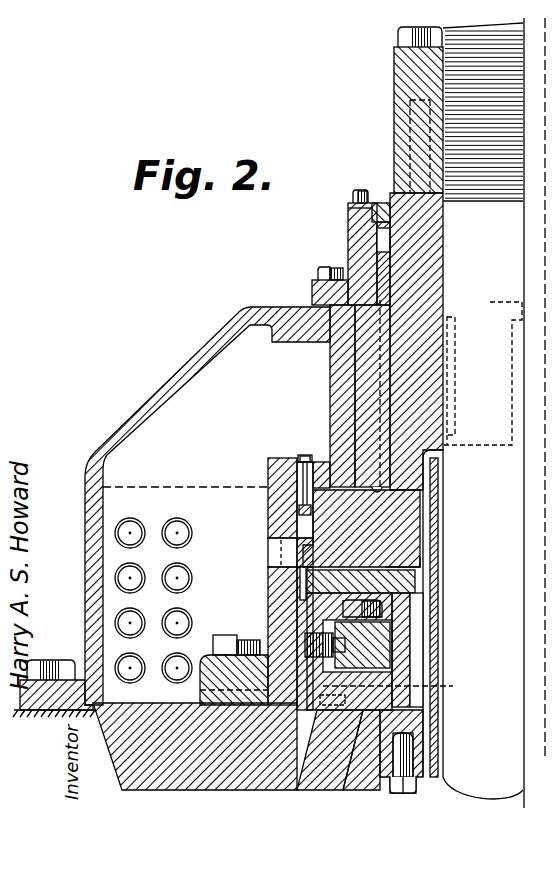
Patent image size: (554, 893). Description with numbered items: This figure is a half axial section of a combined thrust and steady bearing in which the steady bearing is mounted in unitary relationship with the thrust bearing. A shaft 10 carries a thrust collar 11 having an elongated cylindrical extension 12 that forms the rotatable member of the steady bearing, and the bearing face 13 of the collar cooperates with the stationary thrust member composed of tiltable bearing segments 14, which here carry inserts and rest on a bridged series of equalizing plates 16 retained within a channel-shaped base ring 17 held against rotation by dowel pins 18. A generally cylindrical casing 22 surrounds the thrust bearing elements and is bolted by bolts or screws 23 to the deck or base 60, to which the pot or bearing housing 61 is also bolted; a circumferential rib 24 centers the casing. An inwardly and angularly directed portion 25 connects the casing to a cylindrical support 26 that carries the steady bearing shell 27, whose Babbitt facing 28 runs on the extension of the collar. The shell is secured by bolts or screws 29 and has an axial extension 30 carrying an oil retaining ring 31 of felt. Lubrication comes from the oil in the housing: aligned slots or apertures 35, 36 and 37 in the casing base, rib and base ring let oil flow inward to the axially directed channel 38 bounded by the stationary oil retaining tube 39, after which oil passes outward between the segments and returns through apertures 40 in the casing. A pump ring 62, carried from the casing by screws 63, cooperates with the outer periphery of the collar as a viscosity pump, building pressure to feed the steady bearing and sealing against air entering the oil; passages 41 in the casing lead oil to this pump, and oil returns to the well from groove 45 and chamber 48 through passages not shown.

The shaft 10 is at (494, 413).
The thrust collar 11 is at (400, 523).
The cylindrical extension 12 is at (425, 280).
The bearing face 13 is at (390, 565).
The bearing segments 14 is at (415, 581).
The equalizing plates 16 is at (375, 645).
The channel-shaped base ring 17 is at (400, 675).
The dowel pins 18 is at (402, 686).
The casing 22 is at (268, 483).
The bolts or screws 23 is at (226, 636).
The circumferential rib 24 is at (306, 785).
The inwardly directed portion 25 is at (320, 476).
The cylindrical support 26 is at (343, 387).
The steady bearing shell 27 is at (367, 361).
The Babbitt facing 28 is at (387, 318).
The bolts or screws 29 is at (318, 265).
The axial extension 30 is at (360, 242).
The oil retaining ring 31 is at (388, 202).
The slots or apertures in casing base 35 is at (200, 690).
The slots or apertures in circumferential rib 36 is at (266, 712).
The slots or apertures in base ring 37 is at (354, 785).
The axially directed channel 38 is at (417, 612).
The oil retaining tube 39 is at (427, 731).
The apertures 40 is at (280, 546).
The passages 41 is at (268, 576).
The groove 45 is at (390, 267).
The chamber 48 is at (390, 237).
The deck or base 60 is at (190, 770).
The pot or bearing housing 61 is at (192, 362).
The pump ring 62 is at (297, 503).
The screws 63 is at (300, 482).